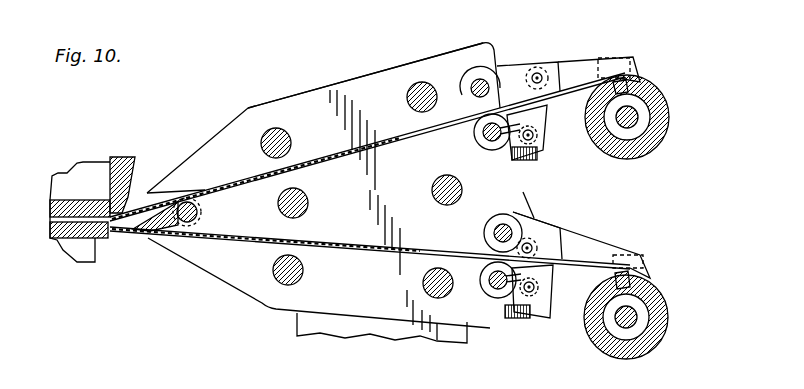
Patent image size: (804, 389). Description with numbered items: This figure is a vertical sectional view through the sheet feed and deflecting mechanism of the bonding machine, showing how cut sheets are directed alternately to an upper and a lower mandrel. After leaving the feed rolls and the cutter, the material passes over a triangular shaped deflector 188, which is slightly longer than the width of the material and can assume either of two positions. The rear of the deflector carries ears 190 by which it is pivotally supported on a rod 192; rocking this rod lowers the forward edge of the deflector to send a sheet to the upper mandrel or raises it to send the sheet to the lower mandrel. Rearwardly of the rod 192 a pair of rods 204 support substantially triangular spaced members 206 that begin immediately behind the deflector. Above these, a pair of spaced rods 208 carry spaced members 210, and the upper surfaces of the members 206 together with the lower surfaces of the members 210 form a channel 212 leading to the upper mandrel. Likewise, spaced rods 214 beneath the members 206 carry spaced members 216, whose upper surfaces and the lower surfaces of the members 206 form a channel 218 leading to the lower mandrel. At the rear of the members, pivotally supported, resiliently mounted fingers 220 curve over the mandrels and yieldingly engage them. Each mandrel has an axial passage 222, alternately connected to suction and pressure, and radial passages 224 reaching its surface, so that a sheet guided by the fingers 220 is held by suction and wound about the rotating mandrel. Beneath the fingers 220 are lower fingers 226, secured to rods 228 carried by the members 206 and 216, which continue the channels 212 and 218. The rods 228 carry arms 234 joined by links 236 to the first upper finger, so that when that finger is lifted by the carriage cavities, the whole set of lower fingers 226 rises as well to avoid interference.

The triangular shaped deflector 188 is at (143, 233).
The ears 190 is at (150, 193).
The rod 192 is at (201, 210).
The rods 204 is at (304, 200).
The spaced members 206 is at (440, 169).
The spaced rods 208 is at (261, 147).
The spaced members 210 is at (378, 77).
The channel 212 is at (390, 139).
The spaced rods 214 is at (275, 277).
The spaced members 216 is at (352, 277).
The channel 218 is at (340, 232).
The fingers 220 is at (585, 62).
The axial passage 222 is at (641, 105).
The radial passages 224 is at (624, 82).
The lower fingers 226 is at (561, 98).
The rods 228 is at (490, 150).
The arms 234 is at (528, 161).
The links 236 is at (527, 74).